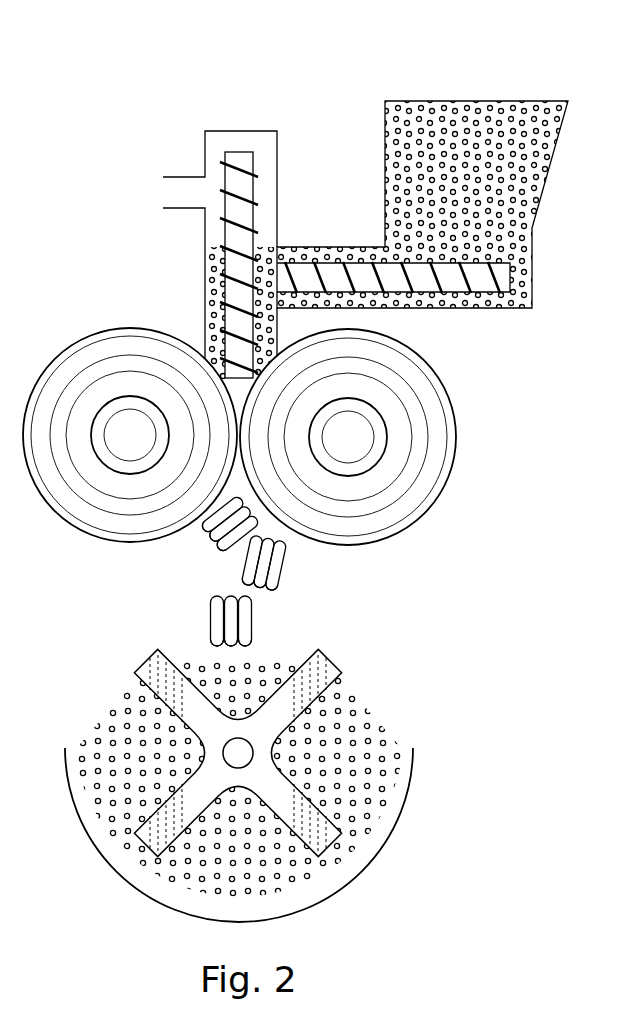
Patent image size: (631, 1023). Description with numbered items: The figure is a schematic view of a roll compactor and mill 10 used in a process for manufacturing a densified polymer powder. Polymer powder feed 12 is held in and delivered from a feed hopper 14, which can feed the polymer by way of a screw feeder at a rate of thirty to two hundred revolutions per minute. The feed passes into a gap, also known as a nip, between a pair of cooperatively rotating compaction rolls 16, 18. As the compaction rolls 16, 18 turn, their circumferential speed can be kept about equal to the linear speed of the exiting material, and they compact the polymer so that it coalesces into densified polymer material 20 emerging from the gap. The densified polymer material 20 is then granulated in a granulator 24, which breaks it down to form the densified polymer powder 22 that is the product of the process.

The roll compactor and mill 10 is at (122, 90).
The polymer powder feed 12 is at (465, 212).
The feed hopper 14 is at (485, 100).
The compaction roll 16 is at (82, 345).
The compaction roll 18 is at (452, 403).
The densified polymer material 20 is at (212, 623).
The densified polymer powder 22 is at (237, 863).
The granulator 24 is at (313, 690).